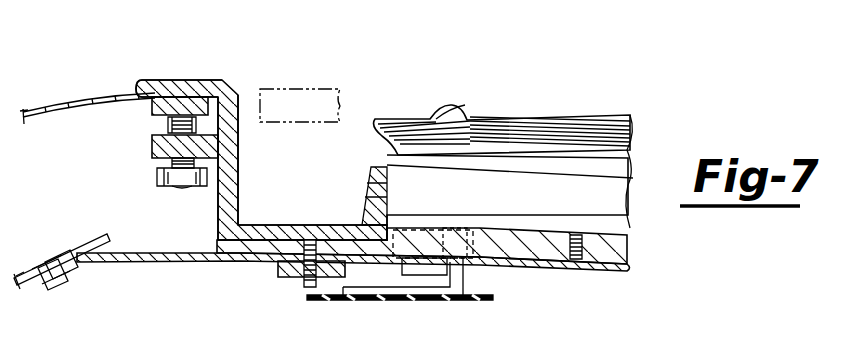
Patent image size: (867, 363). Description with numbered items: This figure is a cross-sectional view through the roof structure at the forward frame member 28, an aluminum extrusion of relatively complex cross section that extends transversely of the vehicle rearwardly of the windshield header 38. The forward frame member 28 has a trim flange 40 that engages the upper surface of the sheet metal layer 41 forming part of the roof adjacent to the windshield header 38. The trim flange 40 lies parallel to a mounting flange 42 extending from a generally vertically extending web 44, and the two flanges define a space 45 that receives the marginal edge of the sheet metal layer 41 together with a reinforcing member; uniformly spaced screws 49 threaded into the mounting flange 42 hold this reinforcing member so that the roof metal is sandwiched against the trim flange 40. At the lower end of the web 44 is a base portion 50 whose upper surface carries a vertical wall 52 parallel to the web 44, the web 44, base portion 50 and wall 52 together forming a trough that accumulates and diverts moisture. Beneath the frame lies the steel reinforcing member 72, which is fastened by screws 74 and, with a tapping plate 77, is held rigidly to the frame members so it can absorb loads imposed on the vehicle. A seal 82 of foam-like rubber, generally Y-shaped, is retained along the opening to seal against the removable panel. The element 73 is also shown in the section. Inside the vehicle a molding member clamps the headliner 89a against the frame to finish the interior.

The forward frame member 28 is at (226, 82).
The windshield header 38 is at (88, 96).
The trim flange 40 is at (186, 80).
The sheet metal layer 41 is at (156, 108).
The mounting flange 42 is at (158, 142).
The web 44 is at (238, 188).
The space 45 is at (205, 116).
The screws 49 is at (161, 190).
The base portion 50 is at (264, 203).
The vertical wall 52 is at (367, 183).
The reinforcing member 72 is at (622, 266).
The rod 73 is at (92, 240).
The screws 74 is at (577, 261).
The tapping plate 77 is at (283, 270).
The seal 82 is at (470, 106).
The headliner 89a is at (400, 301).